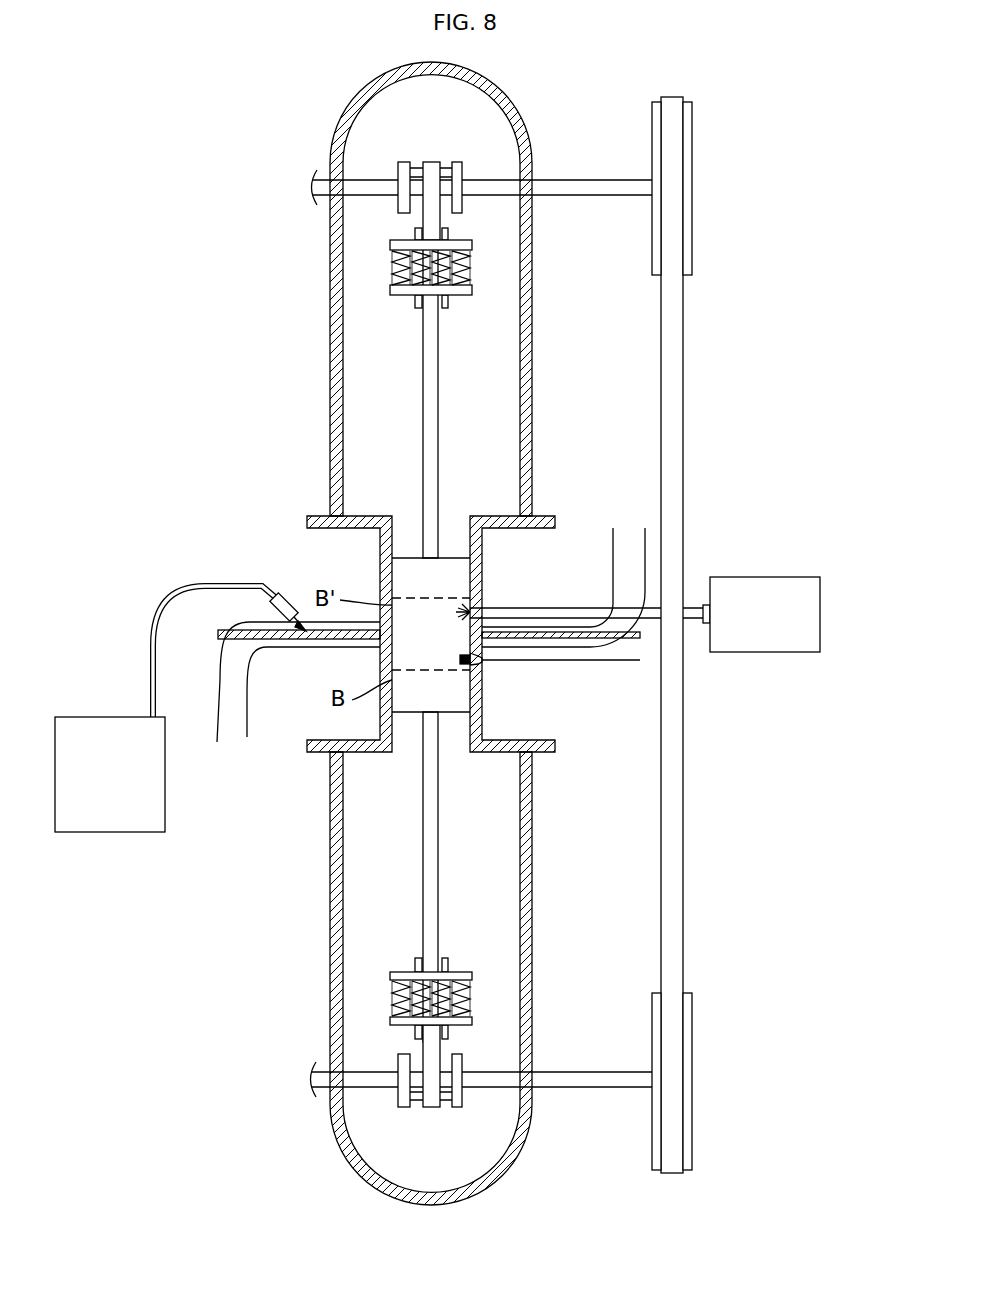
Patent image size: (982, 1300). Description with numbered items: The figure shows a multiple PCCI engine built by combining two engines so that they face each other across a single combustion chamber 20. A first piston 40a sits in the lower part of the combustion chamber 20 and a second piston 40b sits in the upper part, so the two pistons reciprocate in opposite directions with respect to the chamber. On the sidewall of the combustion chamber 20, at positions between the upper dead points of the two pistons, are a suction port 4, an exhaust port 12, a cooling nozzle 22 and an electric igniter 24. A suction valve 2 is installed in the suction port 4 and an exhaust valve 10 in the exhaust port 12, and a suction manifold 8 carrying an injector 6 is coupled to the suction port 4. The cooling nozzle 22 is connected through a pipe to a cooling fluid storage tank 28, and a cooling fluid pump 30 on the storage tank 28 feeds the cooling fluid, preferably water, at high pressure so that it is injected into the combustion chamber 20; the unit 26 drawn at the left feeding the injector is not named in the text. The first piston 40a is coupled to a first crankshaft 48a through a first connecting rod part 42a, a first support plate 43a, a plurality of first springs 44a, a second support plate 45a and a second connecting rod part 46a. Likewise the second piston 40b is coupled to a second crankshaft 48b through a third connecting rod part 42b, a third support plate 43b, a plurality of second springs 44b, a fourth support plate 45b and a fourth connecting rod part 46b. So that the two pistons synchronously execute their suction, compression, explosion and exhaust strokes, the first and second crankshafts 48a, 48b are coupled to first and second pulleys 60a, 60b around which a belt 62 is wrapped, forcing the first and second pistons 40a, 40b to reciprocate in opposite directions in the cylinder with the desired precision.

The suction valve 2 is at (233, 630).
The suction port 4 is at (288, 652).
The injector 6 is at (275, 590).
The suction manifold 8 is at (227, 705).
The exhaust valve 10 is at (626, 645).
The exhaust port 12 is at (610, 578).
The combustion chamber 20 is at (440, 625).
The cooling nozzle 22 is at (475, 612).
The electric igniter 24 is at (482, 660).
The fuel supply unit 26 is at (135, 822).
The cooling fluid storage tank 28 is at (796, 652).
The cooling fluid pump 30 is at (706, 628).
The first piston 40a is at (478, 698).
The second piston 40b is at (398, 573).
The first connecting rod part 42a is at (435, 778).
The third connecting rod part 42b is at (425, 488).
The first support plate 43a is at (462, 973).
The third support plate 43b is at (390, 294).
The first springs 44a is at (468, 998).
The second springs 44b is at (390, 270).
The second support plate 45a is at (470, 1020).
The fourth support plate 45b is at (390, 244).
The second connecting rod part 46a is at (430, 1085).
The fourth connecting rod part 46b is at (422, 214).
The first crankshaft 48a is at (493, 1078).
The second crankshaft 48b is at (358, 182).
The first pulley 60a is at (700, 1080).
The second pulley 60b is at (692, 180).
The belt 62 is at (683, 720).